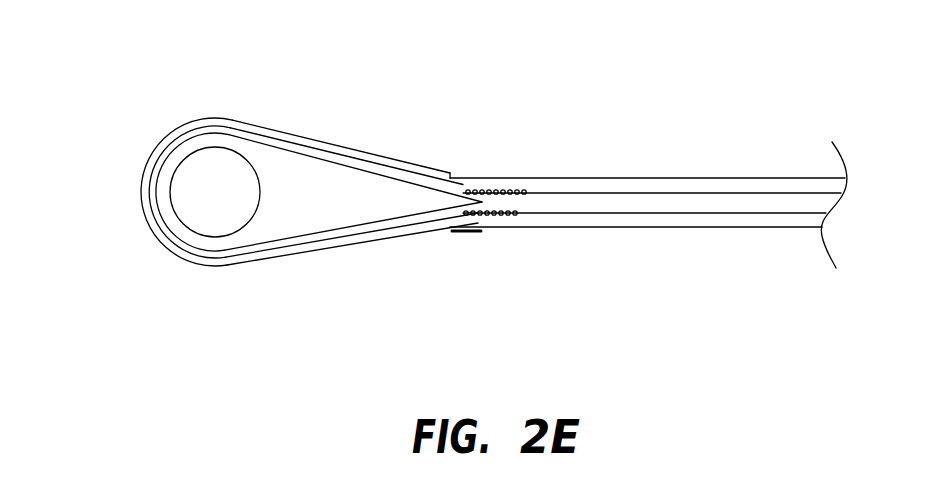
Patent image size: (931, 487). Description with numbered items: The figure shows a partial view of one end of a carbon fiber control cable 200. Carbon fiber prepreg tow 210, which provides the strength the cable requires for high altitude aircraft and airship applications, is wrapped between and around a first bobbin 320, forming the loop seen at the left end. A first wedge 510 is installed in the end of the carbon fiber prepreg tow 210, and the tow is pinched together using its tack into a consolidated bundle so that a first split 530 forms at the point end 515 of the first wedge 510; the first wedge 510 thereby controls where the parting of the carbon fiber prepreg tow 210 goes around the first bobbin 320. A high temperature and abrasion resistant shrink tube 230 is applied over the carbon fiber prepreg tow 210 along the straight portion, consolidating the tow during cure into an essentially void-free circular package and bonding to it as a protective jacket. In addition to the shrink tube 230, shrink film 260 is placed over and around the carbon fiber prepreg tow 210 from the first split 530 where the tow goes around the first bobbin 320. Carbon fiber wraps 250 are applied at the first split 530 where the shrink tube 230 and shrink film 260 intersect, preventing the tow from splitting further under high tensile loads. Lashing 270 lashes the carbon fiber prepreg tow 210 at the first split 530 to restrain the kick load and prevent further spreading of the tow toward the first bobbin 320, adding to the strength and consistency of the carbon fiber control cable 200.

The carbon fiber control cable 200 is at (708, 112).
The carbon fiber prepreg tow 210 is at (281, 135).
The shrink tube 230 is at (591, 177).
The carbon fiber wraps 250 is at (445, 186).
The shrink film 260 is at (350, 150).
The lashing 270 is at (510, 189).
The first bobbin 320 is at (162, 241).
The first wedge 510 is at (313, 224).
The point end 515 is at (480, 206).
The first split 530 is at (492, 210).